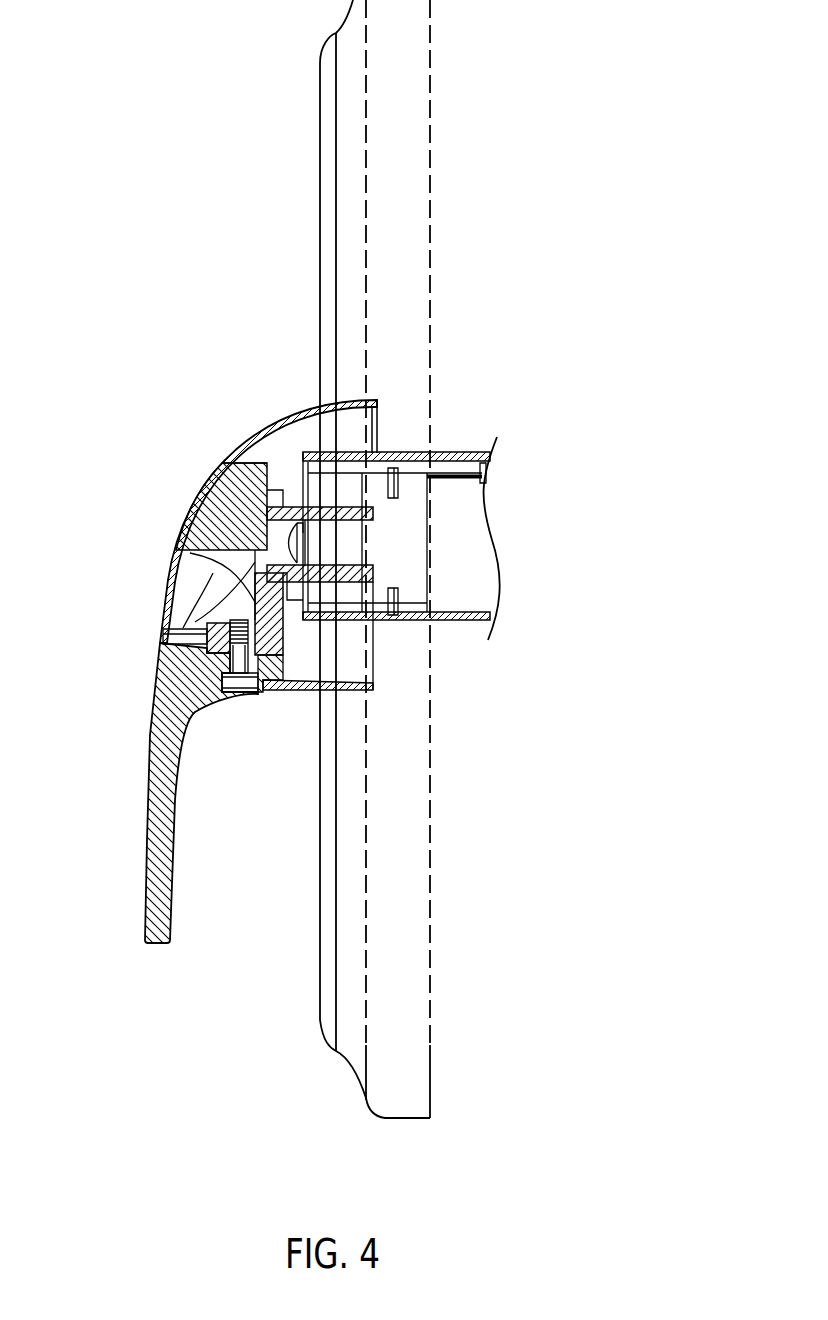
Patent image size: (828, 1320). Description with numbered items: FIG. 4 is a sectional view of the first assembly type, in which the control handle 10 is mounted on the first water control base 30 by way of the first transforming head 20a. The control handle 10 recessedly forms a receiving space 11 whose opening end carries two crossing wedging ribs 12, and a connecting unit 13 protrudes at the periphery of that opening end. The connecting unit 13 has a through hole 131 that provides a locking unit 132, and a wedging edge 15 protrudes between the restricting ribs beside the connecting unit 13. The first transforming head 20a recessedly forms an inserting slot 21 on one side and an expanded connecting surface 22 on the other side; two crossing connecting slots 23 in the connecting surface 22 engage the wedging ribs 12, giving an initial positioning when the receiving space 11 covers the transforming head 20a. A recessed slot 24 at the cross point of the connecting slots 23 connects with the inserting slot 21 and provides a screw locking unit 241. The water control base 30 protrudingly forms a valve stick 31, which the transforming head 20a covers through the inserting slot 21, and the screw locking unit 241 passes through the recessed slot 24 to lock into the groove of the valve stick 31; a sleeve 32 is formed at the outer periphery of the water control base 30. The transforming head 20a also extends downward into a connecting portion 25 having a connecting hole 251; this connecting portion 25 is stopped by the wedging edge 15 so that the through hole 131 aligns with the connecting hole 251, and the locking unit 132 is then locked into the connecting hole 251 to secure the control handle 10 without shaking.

The control handle 10 is at (150, 690).
The receiving space 11 is at (290, 435).
The wedging ribs 12 is at (182, 533).
The connecting slots 23 is at (245, 500).
The connecting unit 13 is at (287, 690).
The through hole 131 is at (232, 697).
The locking unit 132 is at (110, 621).
The connecting hole 251 is at (205, 630).
The wedging edge 15 is at (160, 663).
The first transforming head 20a is at (220, 460).
The connecting surface 22 is at (178, 572).
The recessed slot 24 is at (277, 535).
The screw locking unit 241 is at (300, 500).
The connecting portion 25 is at (280, 646).
The inserting slot 21 is at (420, 496).
The valve stick 31 is at (437, 470).
The first water control base 30 is at (480, 550).
The sleeve 32 is at (442, 620).